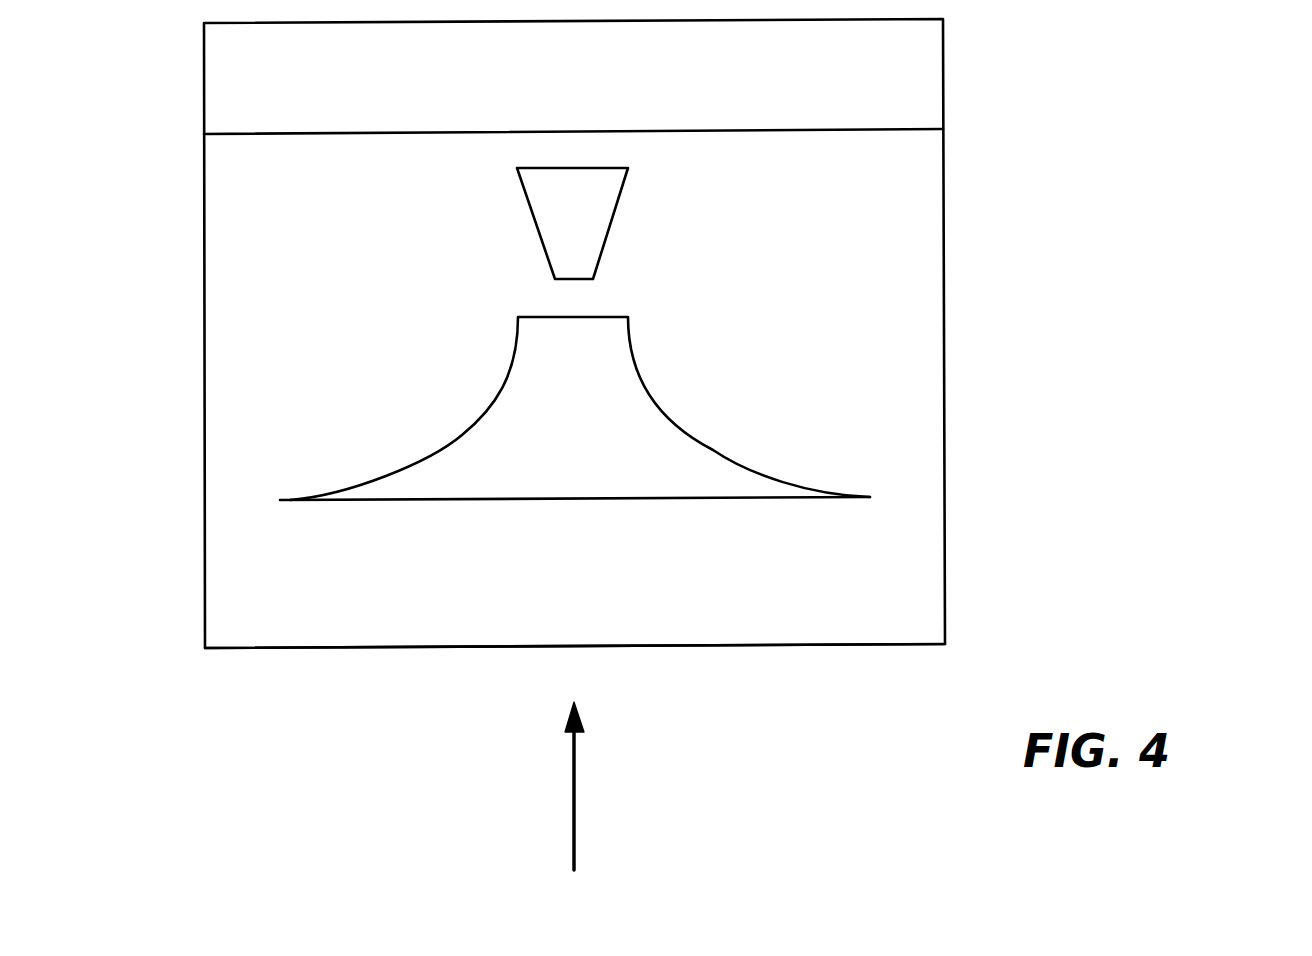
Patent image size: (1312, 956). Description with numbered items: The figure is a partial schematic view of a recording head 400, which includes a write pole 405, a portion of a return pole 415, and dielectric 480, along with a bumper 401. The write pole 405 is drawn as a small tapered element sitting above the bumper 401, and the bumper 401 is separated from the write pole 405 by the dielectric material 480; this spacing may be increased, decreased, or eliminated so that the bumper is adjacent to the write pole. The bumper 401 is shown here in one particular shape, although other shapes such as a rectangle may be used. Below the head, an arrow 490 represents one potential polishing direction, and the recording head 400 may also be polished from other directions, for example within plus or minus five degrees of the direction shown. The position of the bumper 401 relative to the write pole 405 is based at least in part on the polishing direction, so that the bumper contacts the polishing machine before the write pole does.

The recording head 400 is at (1210, 120).
The return pole 415 is at (830, 73).
The write pole 405 is at (555, 242).
The bumper 401 is at (518, 425).
The dielectric 480 is at (850, 598).
The arrow 490 is at (574, 796).